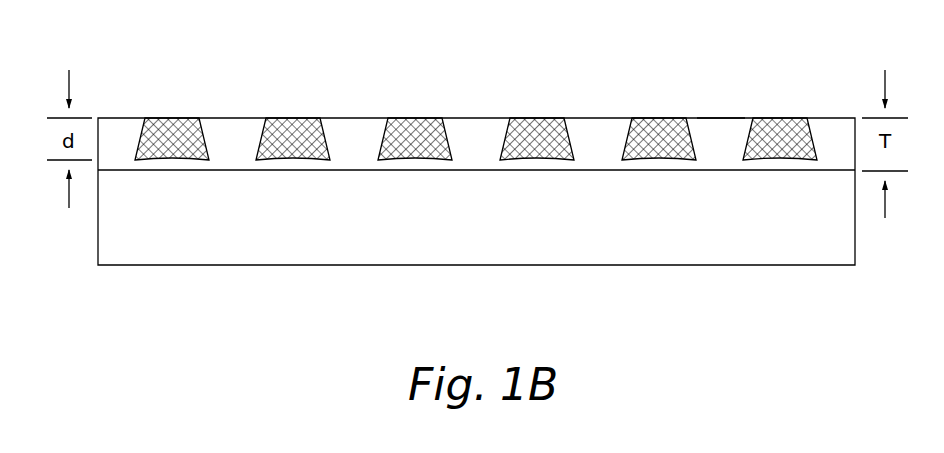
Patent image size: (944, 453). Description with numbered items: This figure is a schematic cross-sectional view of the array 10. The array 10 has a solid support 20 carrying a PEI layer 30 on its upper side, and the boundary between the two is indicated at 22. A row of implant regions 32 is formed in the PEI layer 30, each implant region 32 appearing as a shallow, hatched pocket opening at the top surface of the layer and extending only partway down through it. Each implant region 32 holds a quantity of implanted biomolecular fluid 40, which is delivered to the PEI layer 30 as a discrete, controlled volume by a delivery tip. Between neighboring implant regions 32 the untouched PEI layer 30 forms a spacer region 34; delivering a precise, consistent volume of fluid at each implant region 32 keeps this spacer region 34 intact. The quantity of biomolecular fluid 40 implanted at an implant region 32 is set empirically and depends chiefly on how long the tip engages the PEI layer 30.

The array 10 is at (531, 50).
The solid support 20 is at (98, 245).
The interface between substrate and layer 22 is at (342, 170).
The PEI layer 30 is at (98, 171).
The implant regions 32 is at (203, 132).
The spacer region 34 is at (735, 130).
The implanted biomolecular fluid 40 is at (160, 124).